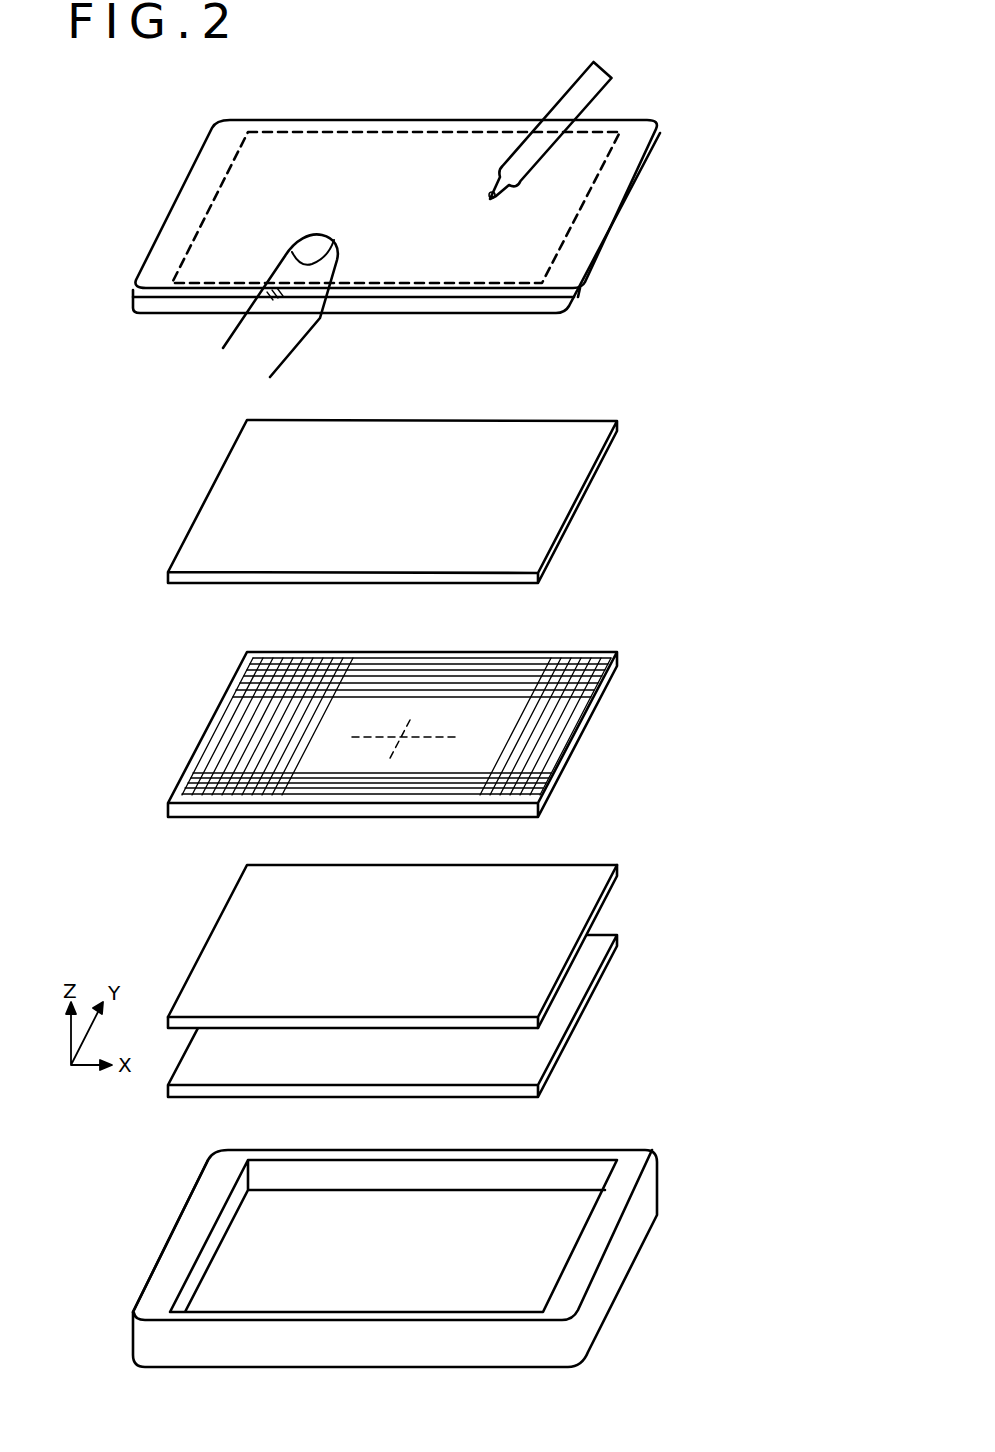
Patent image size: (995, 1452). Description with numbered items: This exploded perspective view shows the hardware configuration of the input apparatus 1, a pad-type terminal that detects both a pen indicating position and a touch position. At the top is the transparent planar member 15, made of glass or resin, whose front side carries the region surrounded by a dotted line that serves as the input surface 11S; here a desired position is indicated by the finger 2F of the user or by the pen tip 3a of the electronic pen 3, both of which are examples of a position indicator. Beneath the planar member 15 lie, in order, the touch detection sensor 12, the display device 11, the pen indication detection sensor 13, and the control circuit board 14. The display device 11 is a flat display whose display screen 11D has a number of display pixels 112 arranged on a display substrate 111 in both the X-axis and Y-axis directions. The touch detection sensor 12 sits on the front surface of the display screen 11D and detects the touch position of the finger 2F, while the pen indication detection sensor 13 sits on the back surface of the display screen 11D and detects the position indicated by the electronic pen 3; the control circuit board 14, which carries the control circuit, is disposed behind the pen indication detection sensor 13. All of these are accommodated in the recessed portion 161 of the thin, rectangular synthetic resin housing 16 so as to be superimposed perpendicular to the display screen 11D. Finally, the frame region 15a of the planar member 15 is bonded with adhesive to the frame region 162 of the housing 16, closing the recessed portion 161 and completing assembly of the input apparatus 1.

The input apparatus 1 is at (103, 121).
The finger 2F is at (280, 337).
The electronic pen 3 is at (577, 97).
The pen tip 3a is at (493, 203).
The display device 11 is at (594, 707).
The input surface 11S is at (352, 150).
The display screen 11D is at (383, 715).
The display substrate 111 is at (560, 752).
The display pixels 112 is at (265, 662).
The touch detection sensor 12 is at (580, 503).
The pen indication detection sensor 13 is at (597, 879).
The control circuit board 14 is at (593, 990).
The planar member 15 is at (600, 221).
The frame region 15a is at (152, 268).
The housing 16 is at (617, 1259).
The recessed portion 161 is at (522, 1225).
The frame region 162 is at (168, 1268).